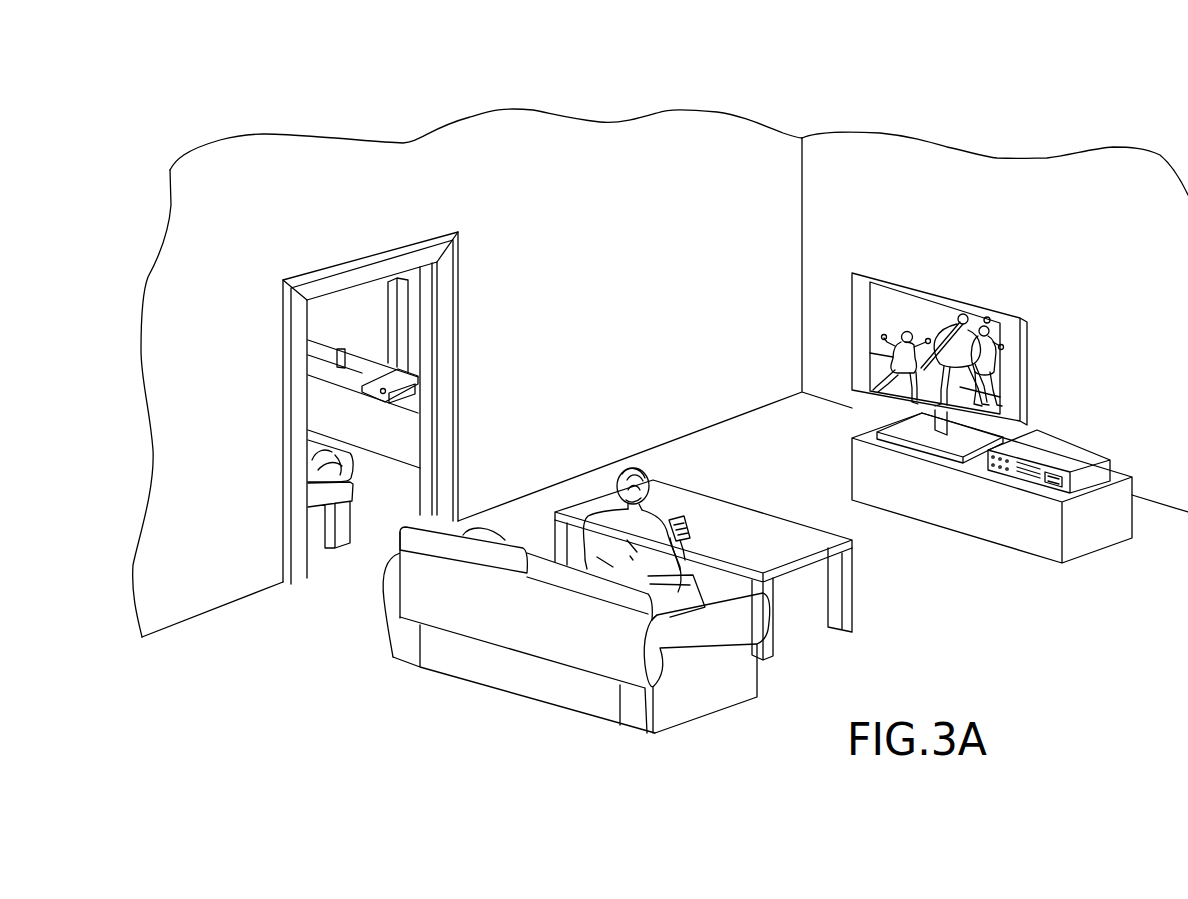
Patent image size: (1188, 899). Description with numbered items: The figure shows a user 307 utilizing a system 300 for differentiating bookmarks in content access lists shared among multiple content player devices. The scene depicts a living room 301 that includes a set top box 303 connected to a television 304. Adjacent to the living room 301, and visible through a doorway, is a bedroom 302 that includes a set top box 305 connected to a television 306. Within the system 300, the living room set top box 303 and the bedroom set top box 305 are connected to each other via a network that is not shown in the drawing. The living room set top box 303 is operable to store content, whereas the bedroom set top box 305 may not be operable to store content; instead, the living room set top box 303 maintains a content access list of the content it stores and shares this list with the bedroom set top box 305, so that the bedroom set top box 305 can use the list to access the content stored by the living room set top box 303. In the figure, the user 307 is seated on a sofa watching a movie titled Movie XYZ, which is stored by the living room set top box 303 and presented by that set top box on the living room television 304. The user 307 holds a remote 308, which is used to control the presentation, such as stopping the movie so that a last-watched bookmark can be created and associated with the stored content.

The system 300 is at (893, 82).
The living room 301 is at (1112, 258).
The bedroom 302 is at (407, 472).
The living room set top box 303 is at (1094, 453).
The living room television 304 is at (1028, 369).
The bedroom set top box 305 is at (413, 379).
The bedroom television 306 is at (410, 303).
The user 307 is at (620, 472).
The remote 308 is at (688, 517).